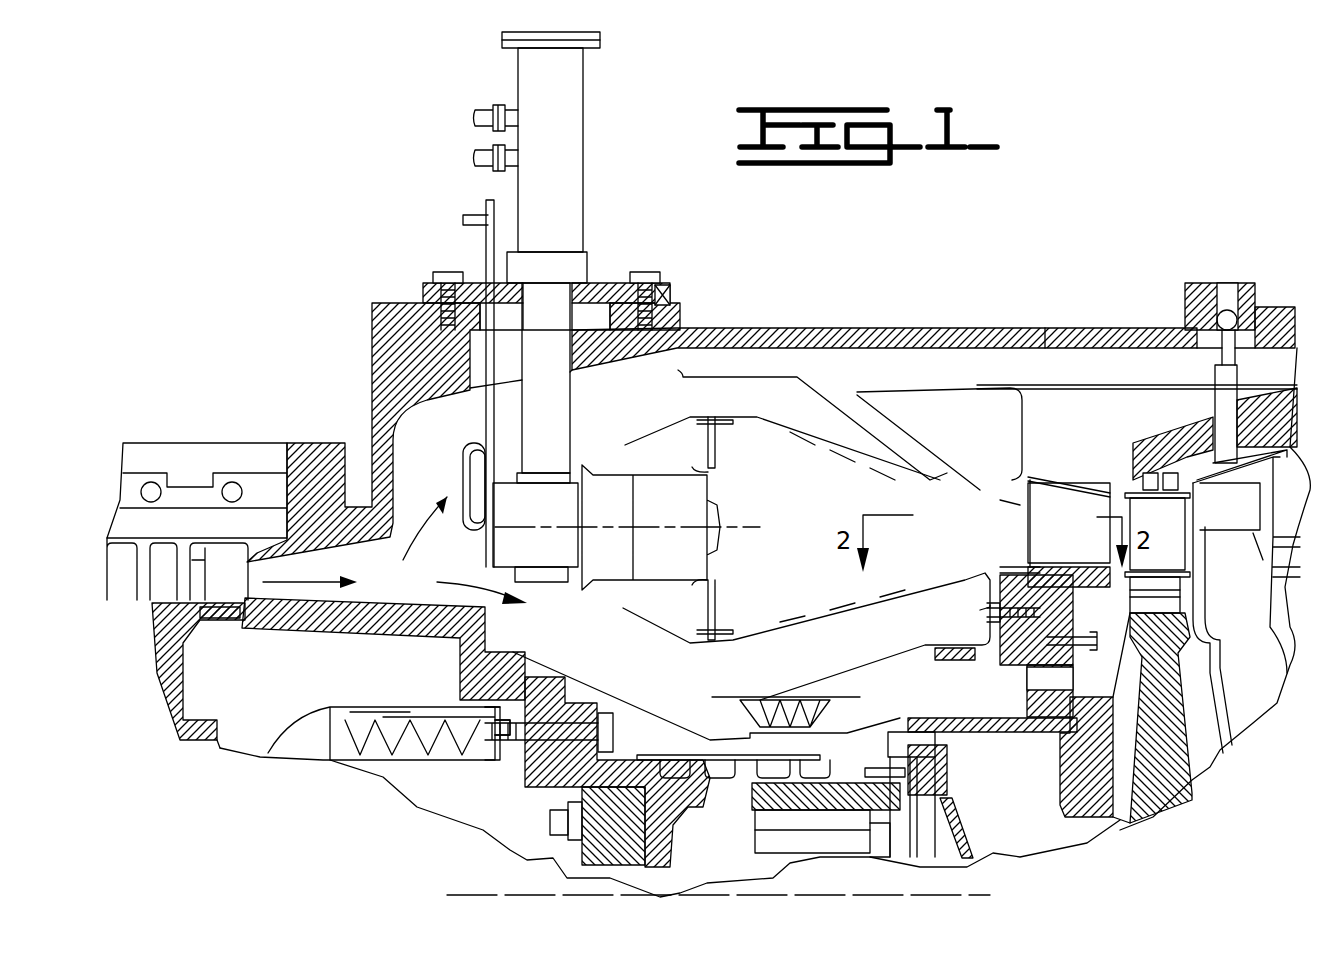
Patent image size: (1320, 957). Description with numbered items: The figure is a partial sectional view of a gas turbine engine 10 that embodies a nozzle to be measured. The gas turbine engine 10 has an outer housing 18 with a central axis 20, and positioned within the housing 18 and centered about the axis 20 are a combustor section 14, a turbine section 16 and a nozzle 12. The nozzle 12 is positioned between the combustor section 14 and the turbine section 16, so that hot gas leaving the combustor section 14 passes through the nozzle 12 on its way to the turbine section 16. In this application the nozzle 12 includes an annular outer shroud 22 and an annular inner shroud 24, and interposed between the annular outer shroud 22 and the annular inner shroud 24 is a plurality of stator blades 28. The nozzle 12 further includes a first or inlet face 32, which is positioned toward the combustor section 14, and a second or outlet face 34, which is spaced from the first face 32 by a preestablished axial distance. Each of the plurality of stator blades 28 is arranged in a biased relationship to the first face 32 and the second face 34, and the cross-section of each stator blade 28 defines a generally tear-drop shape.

The gas turbine engine 10 is at (708, 431).
The nozzle 12 is at (1013, 525).
The combustor section 14 is at (780, 617).
The turbine section 16 is at (1190, 777).
The outer housing 18 is at (825, 328).
The central axis 20 is at (993, 897).
The annular outer shroud 22 is at (1057, 467).
The annular inner shroud 24 is at (1017, 573).
The stator blades 28 is at (1093, 540).
The first or inlet face 32 is at (1000, 500).
The second or outlet face 34 is at (1123, 500).